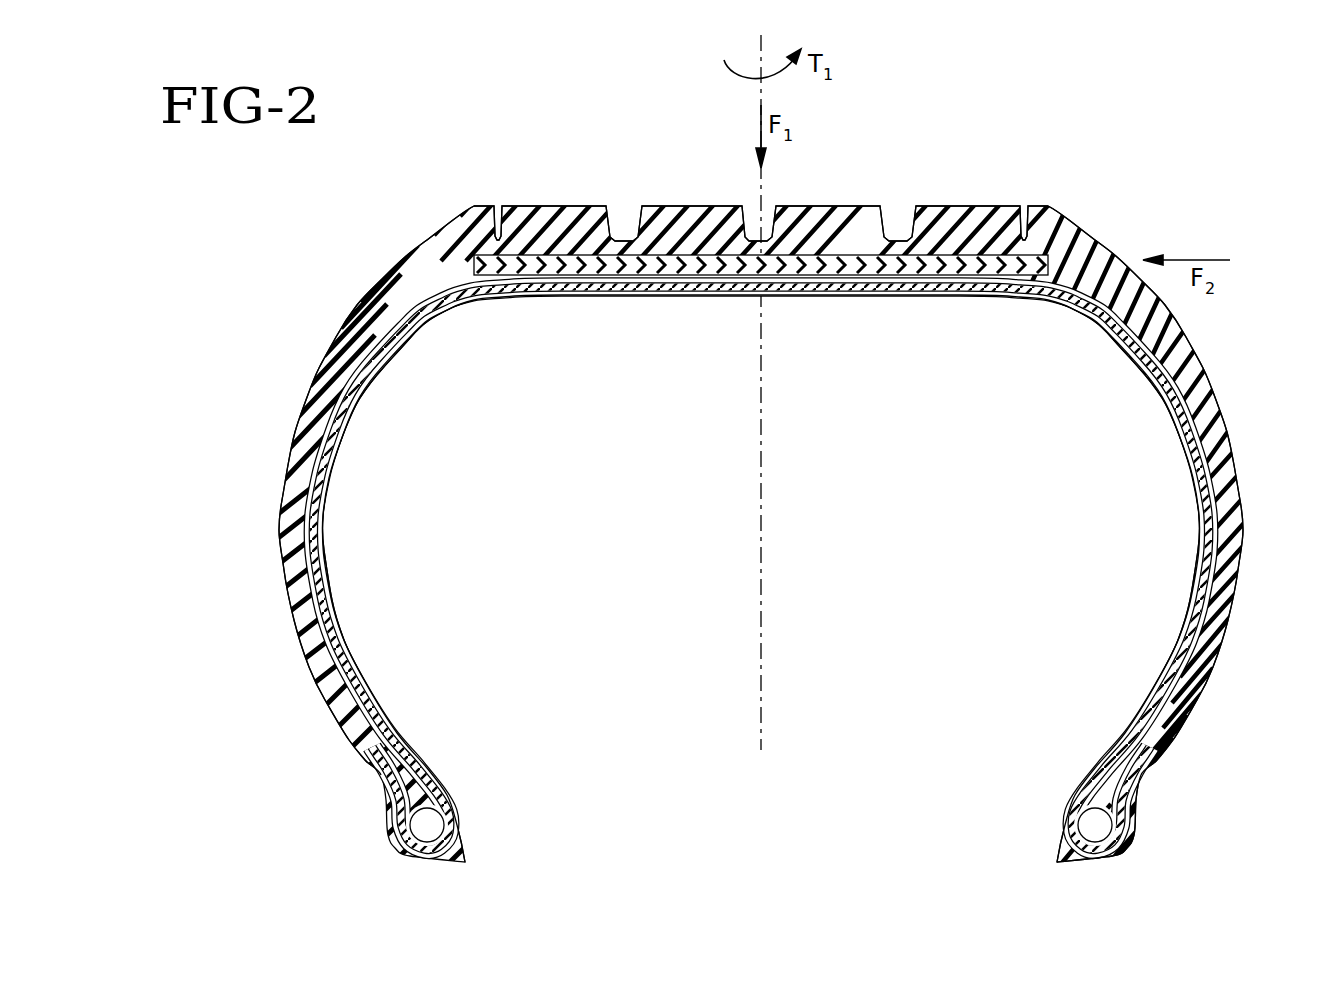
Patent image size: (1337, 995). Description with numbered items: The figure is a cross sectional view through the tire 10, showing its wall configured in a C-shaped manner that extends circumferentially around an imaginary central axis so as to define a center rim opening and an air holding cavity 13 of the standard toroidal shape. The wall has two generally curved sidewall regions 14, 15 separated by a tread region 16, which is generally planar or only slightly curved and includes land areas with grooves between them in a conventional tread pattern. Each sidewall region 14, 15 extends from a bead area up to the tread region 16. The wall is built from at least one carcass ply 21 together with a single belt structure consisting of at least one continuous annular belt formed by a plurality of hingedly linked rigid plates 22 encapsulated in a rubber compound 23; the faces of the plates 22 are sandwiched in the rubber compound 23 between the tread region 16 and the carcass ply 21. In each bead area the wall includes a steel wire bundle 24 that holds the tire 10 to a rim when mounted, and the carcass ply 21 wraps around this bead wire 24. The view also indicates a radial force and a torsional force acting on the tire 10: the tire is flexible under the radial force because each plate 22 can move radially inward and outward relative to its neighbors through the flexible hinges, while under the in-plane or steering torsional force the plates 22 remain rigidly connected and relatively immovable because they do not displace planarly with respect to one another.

The tire 10 is at (1141, 202).
The air holding cavity 13 is at (1136, 566).
The sidewall region 14 is at (1243, 522).
The sidewall region 15 is at (281, 504).
The tread region 16 is at (694, 208).
The carcass ply 21 is at (462, 287).
The rigid plates 22 is at (556, 263).
The rubber compound 23 is at (428, 244).
The steel wire bundle 24 is at (1098, 828).